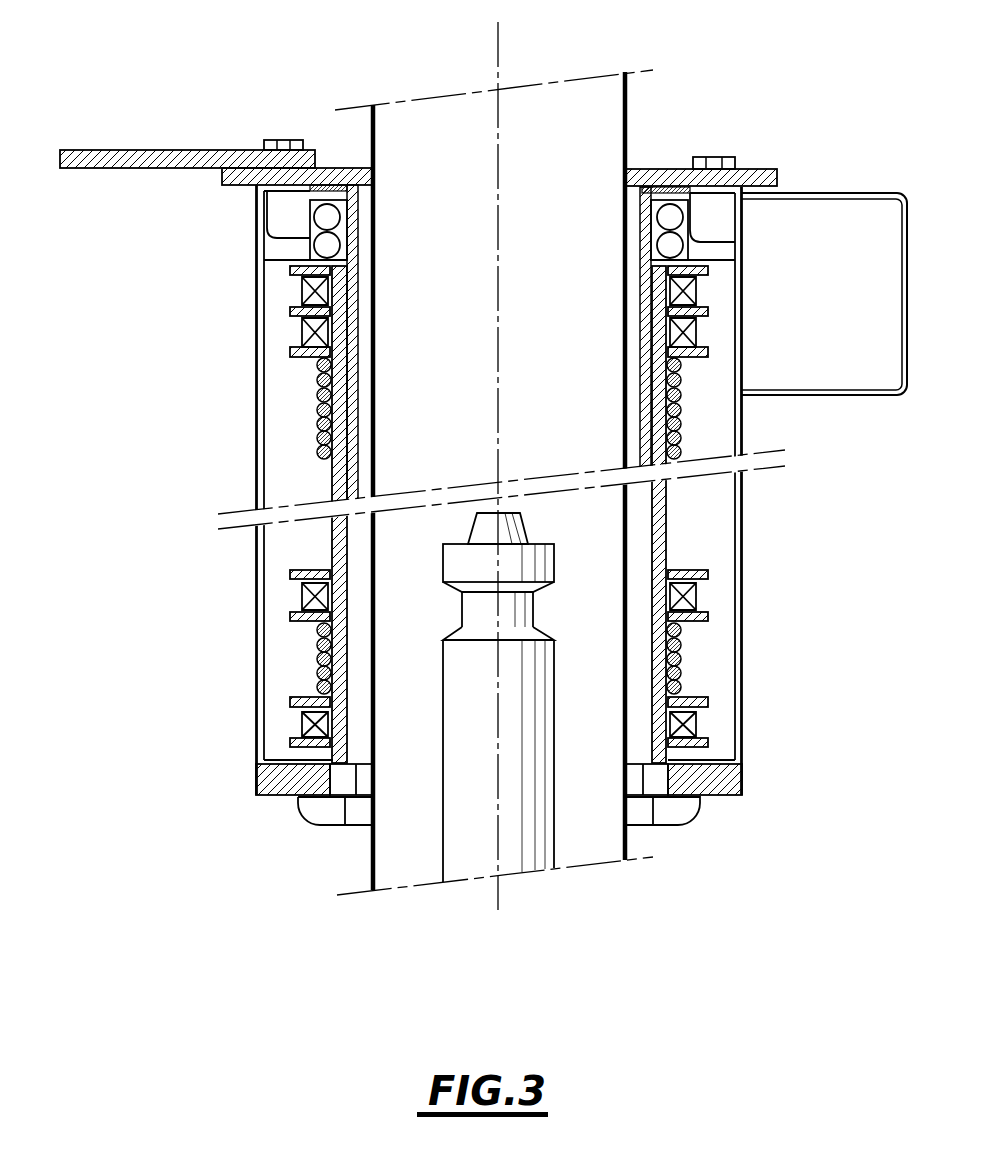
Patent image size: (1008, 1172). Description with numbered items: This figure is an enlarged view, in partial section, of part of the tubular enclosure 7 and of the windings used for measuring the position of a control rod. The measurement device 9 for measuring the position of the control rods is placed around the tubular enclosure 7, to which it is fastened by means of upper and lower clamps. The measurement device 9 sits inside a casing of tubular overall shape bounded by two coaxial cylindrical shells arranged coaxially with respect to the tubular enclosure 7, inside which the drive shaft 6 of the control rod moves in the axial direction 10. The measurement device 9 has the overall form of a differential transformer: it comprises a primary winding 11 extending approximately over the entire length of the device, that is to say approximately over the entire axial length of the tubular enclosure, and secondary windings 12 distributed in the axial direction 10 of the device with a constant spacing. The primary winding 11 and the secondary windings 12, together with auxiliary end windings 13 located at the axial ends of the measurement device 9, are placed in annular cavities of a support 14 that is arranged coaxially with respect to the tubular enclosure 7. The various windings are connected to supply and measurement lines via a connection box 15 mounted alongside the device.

The drive shaft 6 is at (510, 845).
The tubular enclosure 7 is at (627, 128).
The measurement device 9 is at (283, 553).
The axial direction 10 is at (500, 123).
The primary winding 11 is at (317, 408).
The secondary windings 12 is at (302, 333).
The auxiliary end windings 13 is at (302, 290).
The support 14 is at (340, 476).
The connection box 15 is at (822, 238).